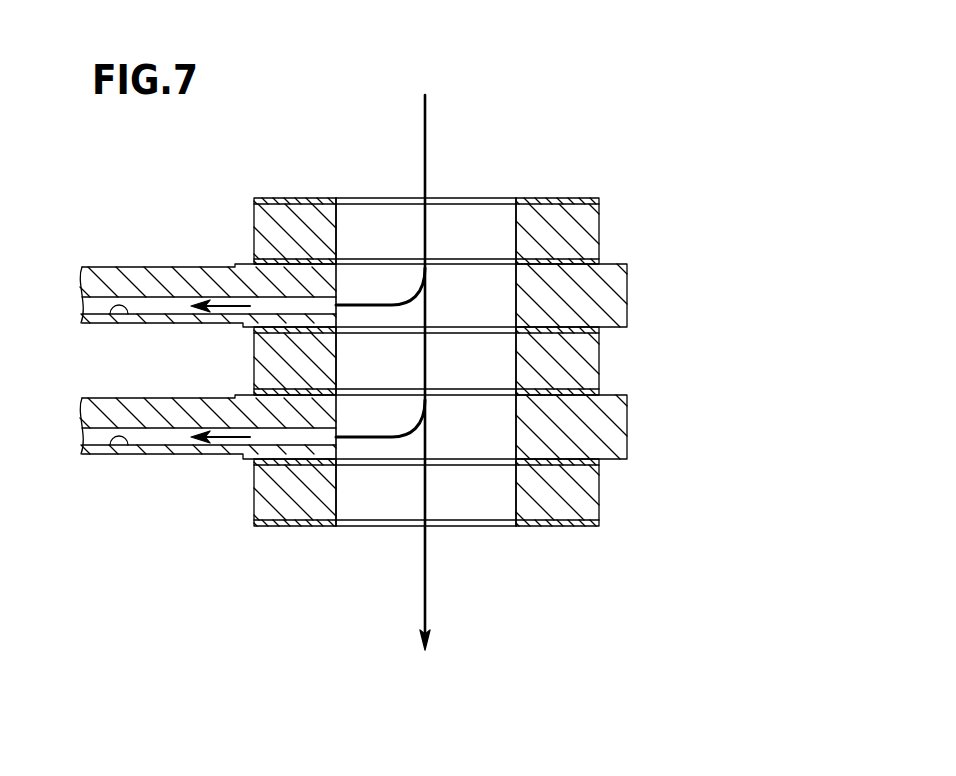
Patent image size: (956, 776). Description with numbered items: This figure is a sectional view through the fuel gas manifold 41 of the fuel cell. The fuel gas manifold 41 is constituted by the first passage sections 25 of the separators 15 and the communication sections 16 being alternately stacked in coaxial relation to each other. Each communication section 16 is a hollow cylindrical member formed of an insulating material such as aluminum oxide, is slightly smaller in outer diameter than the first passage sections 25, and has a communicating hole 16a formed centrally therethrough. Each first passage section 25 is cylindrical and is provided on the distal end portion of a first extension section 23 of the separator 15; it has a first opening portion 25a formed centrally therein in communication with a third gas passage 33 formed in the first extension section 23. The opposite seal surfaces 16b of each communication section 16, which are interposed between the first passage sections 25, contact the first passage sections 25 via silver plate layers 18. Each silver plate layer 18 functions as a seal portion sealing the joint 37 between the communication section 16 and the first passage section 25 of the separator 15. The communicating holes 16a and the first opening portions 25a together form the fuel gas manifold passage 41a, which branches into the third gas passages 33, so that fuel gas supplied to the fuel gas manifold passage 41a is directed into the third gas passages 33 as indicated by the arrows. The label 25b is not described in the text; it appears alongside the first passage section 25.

The separator 15 is at (187, 354).
The communication section 16 is at (254, 218).
The communicating hole 16a is at (337, 223).
The seal surface 16b is at (326, 201).
The silver plate layer 18 is at (572, 255).
The first extension section 23 is at (170, 266).
The first passage section 25 is at (620, 295).
The first opening portion 25a is at (516, 297).
The flange of holding member 25b is at (537, 259).
The third gas passage 33 is at (111, 420).
The joint 37 is at (447, 330).
The fuel gas manifold 41 is at (630, 270).
The fuel gas manifold passage 41a is at (489, 349).